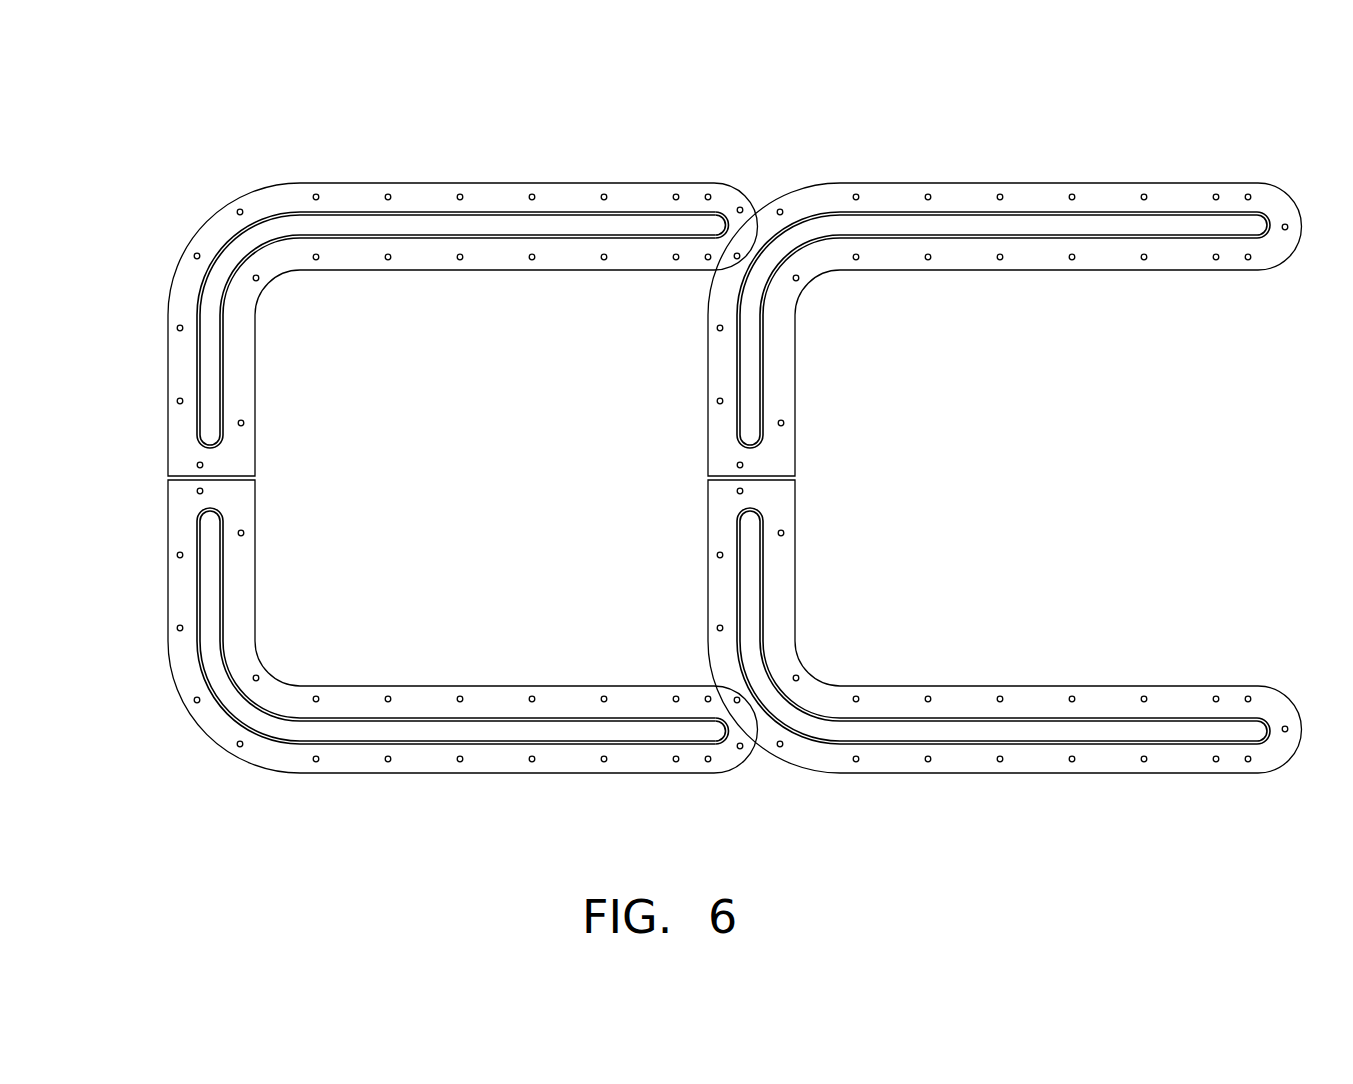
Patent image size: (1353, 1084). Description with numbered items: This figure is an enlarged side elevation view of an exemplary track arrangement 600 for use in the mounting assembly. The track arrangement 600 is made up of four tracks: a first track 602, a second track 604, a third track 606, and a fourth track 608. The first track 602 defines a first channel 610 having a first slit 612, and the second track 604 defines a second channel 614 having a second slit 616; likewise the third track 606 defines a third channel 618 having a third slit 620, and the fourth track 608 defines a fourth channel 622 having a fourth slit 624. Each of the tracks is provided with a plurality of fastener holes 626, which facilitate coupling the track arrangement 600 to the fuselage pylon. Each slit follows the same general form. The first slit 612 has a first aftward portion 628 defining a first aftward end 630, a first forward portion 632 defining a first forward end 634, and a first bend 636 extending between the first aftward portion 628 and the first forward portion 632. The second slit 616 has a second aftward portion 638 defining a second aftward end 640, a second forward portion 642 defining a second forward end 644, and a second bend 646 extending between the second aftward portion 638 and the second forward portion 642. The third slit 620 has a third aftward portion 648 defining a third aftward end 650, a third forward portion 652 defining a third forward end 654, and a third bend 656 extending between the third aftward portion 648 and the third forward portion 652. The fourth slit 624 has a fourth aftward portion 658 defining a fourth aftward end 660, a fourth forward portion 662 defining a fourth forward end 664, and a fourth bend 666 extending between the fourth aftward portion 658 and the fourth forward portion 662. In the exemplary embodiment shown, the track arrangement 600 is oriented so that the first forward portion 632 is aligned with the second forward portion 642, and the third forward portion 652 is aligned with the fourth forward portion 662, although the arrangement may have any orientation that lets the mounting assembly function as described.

The track arrangement 600 is at (1146, 104).
The first track 602 is at (242, 172).
The second track 604 is at (782, 395).
The third track 606 is at (803, 748).
The fourth track 608 is at (260, 782).
The first channel 610 is at (413, 186).
The first slit 612 is at (523, 212).
The second channel 614 is at (1071, 200).
The second slit 616 is at (1048, 177).
The third channel 618 is at (1071, 757).
The third slit 620 is at (1048, 770).
The fourth channel 622 is at (443, 753).
The fourth slit 624 is at (562, 746).
The fastener holes 626 is at (178, 551).
The first aftward portion 628 is at (221, 366).
The first aftward end 630 is at (222, 446).
The first forward portion 632 is at (593, 242).
The first forward end 634 is at (729, 210).
The first bend 636 is at (258, 246).
The second aftward portion 638 is at (805, 375).
The second aftward end 640 is at (805, 449).
The second forward portion 642 is at (1048, 273).
The second forward end 644 is at (1256, 265).
The second bend 646 is at (826, 263).
The third aftward portion 648 is at (805, 581).
The third aftward end 650 is at (805, 503).
The third forward portion 652 is at (1048, 681).
The third forward end 654 is at (1229, 692).
The third bend 656 is at (825, 692).
The fourth aftward portion 658 is at (221, 602).
The fourth aftward end 660 is at (222, 508).
The fourth forward portion 662 is at (593, 716).
The fourth forward end 664 is at (728, 740).
The fourth bend 666 is at (258, 708).